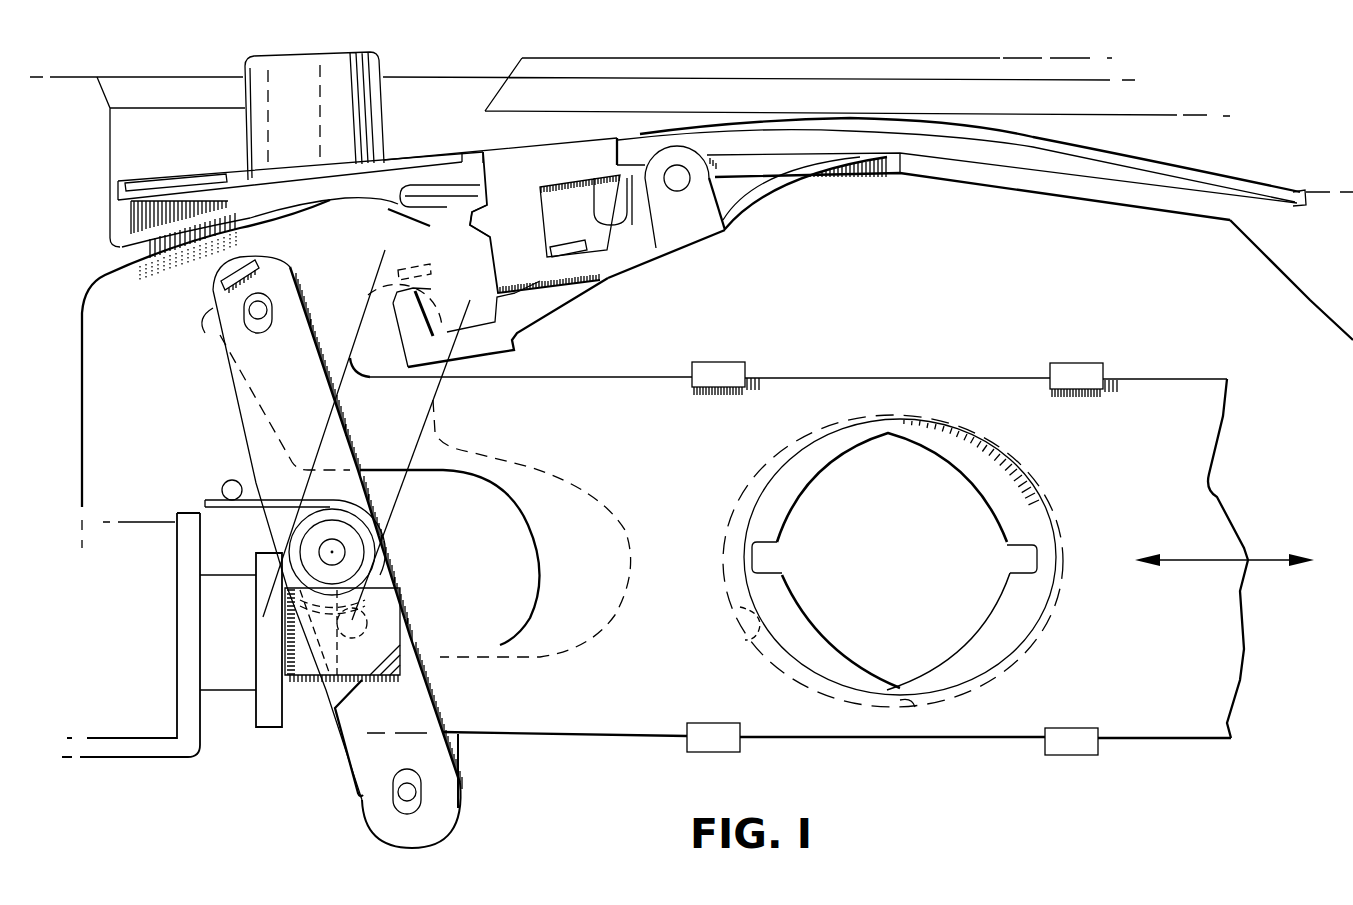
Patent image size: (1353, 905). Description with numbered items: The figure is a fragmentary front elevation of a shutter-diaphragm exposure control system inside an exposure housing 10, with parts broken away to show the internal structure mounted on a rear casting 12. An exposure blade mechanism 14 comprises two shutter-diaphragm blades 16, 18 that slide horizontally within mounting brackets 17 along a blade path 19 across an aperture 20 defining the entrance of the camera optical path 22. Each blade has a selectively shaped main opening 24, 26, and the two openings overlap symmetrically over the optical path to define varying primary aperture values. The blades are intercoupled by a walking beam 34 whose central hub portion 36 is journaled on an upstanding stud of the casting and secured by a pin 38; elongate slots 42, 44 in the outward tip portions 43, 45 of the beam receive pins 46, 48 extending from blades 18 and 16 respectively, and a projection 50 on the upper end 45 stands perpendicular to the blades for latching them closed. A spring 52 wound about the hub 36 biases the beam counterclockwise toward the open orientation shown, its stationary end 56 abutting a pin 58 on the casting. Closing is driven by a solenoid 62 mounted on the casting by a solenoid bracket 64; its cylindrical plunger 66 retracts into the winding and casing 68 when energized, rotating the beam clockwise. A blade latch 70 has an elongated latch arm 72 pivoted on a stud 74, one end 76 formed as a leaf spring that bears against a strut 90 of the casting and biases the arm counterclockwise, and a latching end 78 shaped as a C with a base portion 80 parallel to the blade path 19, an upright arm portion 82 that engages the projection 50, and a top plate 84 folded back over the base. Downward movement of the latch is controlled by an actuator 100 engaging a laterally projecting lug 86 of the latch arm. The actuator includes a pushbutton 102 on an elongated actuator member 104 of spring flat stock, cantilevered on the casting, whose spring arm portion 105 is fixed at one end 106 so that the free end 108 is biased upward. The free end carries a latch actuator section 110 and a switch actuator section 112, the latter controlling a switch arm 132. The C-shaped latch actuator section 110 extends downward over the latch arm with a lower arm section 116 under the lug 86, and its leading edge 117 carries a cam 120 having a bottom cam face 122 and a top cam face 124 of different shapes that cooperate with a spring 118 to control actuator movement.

The exposure housing 10 is at (913, 44).
The rear casting 12 is at (917, 275).
The exposure blade mechanism 14 is at (1205, 365).
The shutter-diaphragm blade 16 is at (566, 377).
The mounting brackets 17 is at (733, 372).
The shutter-diaphragm blade 18 is at (374, 400).
The blade path 19 is at (1256, 560).
The aperture 20 is at (905, 708).
The camera optical path 22 is at (893, 548).
The main opening 24 is at (1050, 624).
The main opening 26 is at (742, 628).
The walking beam 34 is at (240, 398).
The hub portion 36 is at (375, 548).
The pin 38 is at (320, 552).
The elongate slot 42 is at (404, 803).
The outward tip portion 43 is at (463, 794).
The elongate slot 44 is at (250, 330).
The outward tip portion 45 is at (206, 326).
The pin 46 is at (400, 795).
The pin 48 is at (273, 310).
The projection 50 is at (262, 266).
The spring 52 is at (372, 516).
The stationary end 56 is at (210, 498).
The pin 58 is at (228, 480).
The solenoid 62 is at (152, 614).
The solenoid bracket 64 is at (152, 758).
The cylindrical plunger 66 is at (237, 692).
The casing 68 is at (108, 742).
The blade latch 70 is at (625, 287).
The latch arm 72 is at (528, 325).
The stud 74 is at (672, 170).
The leaf spring end 76 is at (789, 182).
The latching end 78 is at (437, 382).
The base portion 80 is at (491, 355).
The upright arm portion 82 is at (398, 332).
The top plate 84 is at (452, 292).
The lug 86 is at (570, 240).
The strut 90 is at (962, 175).
The actuator 100 is at (465, 126).
The pushbutton 102 is at (383, 58).
The actuator member 104 is at (773, 128).
The spring arm portion 105 is at (1040, 140).
The end 106 is at (1302, 191).
The free end 108 is at (248, 178).
The latch actuator section 110 is at (535, 219).
The switch actuator section 112 is at (208, 170).
The lower arm section 116 is at (608, 280).
The leading edge 117 is at (496, 290).
The spring 118 is at (398, 198).
The cam 120 is at (483, 225).
The bottom cam face 122 is at (477, 236).
The top cam face 124 is at (484, 205).
The switch arm 132 is at (180, 196).